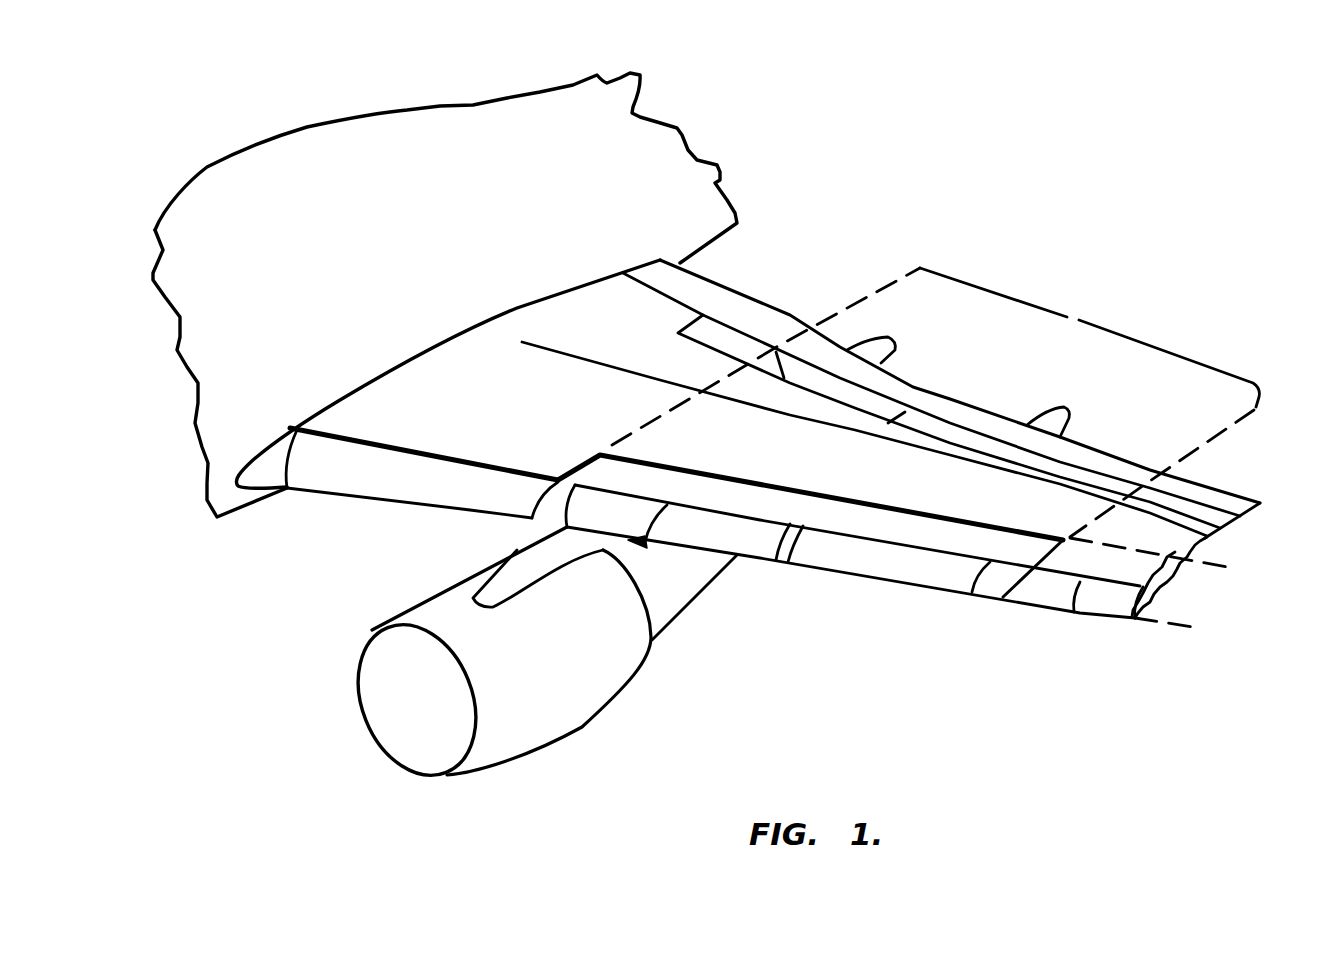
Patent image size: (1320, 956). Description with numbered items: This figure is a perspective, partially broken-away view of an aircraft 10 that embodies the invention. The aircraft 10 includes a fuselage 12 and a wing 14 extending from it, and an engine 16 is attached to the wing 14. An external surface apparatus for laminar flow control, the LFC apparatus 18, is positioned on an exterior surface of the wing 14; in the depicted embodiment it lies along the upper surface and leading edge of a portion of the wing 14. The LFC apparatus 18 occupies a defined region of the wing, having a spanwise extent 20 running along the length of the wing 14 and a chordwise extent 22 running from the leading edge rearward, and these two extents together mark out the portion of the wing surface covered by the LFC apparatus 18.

The aircraft 10 is at (412, 72).
The fuselage 12 is at (560, 137).
The wing 14 is at (470, 404).
The engine 16 is at (627, 643).
The external surface apparatus for laminar flow control (LFC) 18 is at (908, 523).
The spanwise extent 20 is at (1067, 317).
The chordwise extent 22 is at (1230, 566).